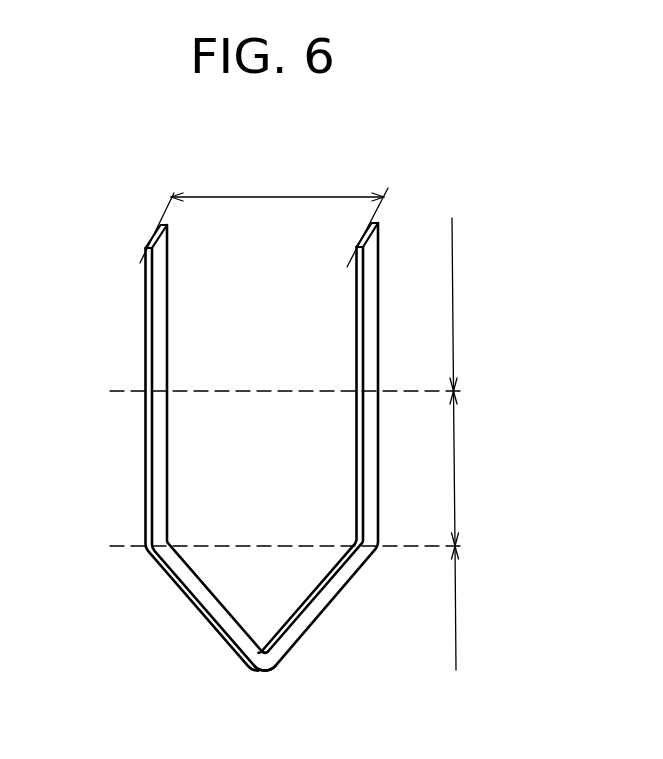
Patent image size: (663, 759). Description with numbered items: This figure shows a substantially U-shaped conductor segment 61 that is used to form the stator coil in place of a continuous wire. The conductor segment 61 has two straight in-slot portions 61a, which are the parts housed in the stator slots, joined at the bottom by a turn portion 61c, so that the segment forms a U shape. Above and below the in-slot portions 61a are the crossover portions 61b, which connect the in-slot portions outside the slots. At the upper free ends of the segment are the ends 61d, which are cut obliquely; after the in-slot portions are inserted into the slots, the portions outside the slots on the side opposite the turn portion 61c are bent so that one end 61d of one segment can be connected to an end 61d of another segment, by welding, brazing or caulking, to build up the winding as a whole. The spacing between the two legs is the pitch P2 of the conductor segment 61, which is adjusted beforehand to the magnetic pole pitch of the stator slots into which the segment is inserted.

The conductor segment 61 is at (412, 183).
The in-slot portion 61a is at (306, 468).
The crossover portion 61b is at (477, 444).
The turn portion 61c is at (277, 665).
The end 61d is at (150, 231).
The pitch of the conductor segment P2 is at (264, 216).